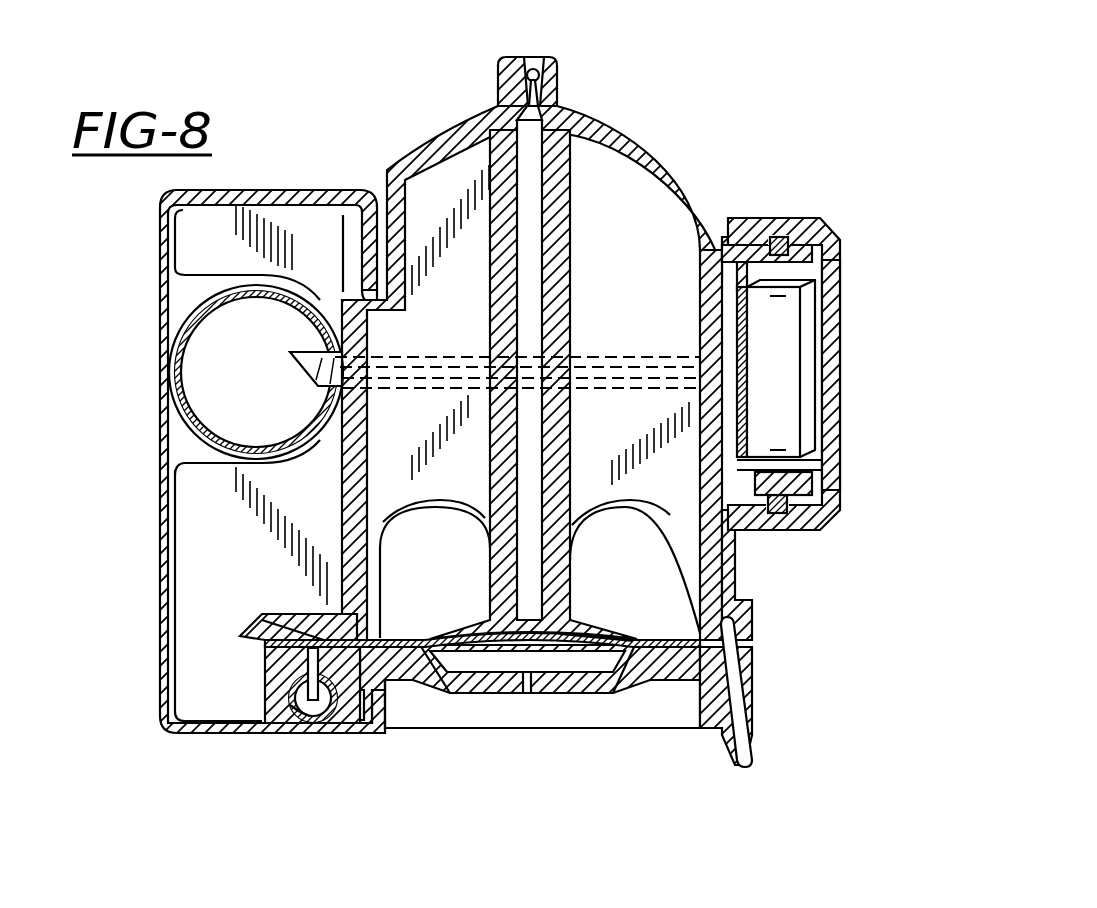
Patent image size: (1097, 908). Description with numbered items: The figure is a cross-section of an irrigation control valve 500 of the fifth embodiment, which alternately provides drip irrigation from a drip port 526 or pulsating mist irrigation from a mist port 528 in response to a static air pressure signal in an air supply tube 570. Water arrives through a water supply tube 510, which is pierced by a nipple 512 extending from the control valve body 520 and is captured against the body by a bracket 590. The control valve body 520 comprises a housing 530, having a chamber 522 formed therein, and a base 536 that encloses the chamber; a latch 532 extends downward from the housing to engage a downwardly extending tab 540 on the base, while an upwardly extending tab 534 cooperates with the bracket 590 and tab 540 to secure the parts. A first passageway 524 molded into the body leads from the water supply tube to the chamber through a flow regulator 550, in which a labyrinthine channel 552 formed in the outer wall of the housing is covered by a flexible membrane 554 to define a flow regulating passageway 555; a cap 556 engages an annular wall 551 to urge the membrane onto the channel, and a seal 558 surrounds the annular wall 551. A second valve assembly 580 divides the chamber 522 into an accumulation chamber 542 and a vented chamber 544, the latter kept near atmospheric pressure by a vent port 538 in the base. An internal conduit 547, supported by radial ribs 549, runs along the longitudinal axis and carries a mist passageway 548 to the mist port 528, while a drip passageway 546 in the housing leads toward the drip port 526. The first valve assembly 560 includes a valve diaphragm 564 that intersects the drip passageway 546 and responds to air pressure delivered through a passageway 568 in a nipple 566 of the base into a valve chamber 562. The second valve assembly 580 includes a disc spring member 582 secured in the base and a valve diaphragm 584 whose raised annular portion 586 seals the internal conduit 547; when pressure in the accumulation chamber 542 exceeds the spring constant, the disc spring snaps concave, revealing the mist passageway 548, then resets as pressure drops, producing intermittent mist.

The irrigation control valve 500 is at (717, 138).
The water supply tube 510 is at (185, 300).
The nipple 512 is at (316, 330).
The control valve body 520 is at (705, 218).
The chamber 522 is at (745, 207).
The first passageway 524 is at (300, 378).
The drip port 526 is at (330, 645).
The mist port 528 is at (545, 62).
The housing 530 is at (640, 150).
The latch 532 is at (745, 652).
The upwardly extending tab 534 is at (364, 228).
The base 536 is at (640, 685).
The vent port 538 is at (508, 663).
The downwardly extending tab 540 is at (748, 706).
The accumulation chamber 542 is at (451, 555).
The vented chamber 544 is at (525, 690).
The drip passageway 546 is at (340, 605).
The internal conduit 547 is at (560, 310).
The mist passageway 548 is at (542, 216).
The ribs 549 is at (692, 563).
The flow regulator 550 is at (841, 415).
The annular wall 551 is at (835, 482).
The labyrinthine channel 552 is at (790, 218).
The flexible membrane 554 is at (746, 392).
The flow regulating passageway 555 is at (745, 362).
The cap 556 is at (834, 440).
The seal 558 is at (778, 512).
The first valve assembly 560 is at (254, 663).
The valve chamber 562 is at (295, 708).
The valve diaphragm 564 is at (258, 618).
The nipple 566 is at (298, 716).
The passageway 568 is at (296, 730).
The air supply tube 570 is at (298, 735).
The second valve assembly 580 is at (727, 606).
The disc spring member 582 is at (450, 683).
The valve diaphragm 584 is at (405, 643).
The raised annular portion 586 is at (560, 633).
The bracket 590 is at (160, 492).